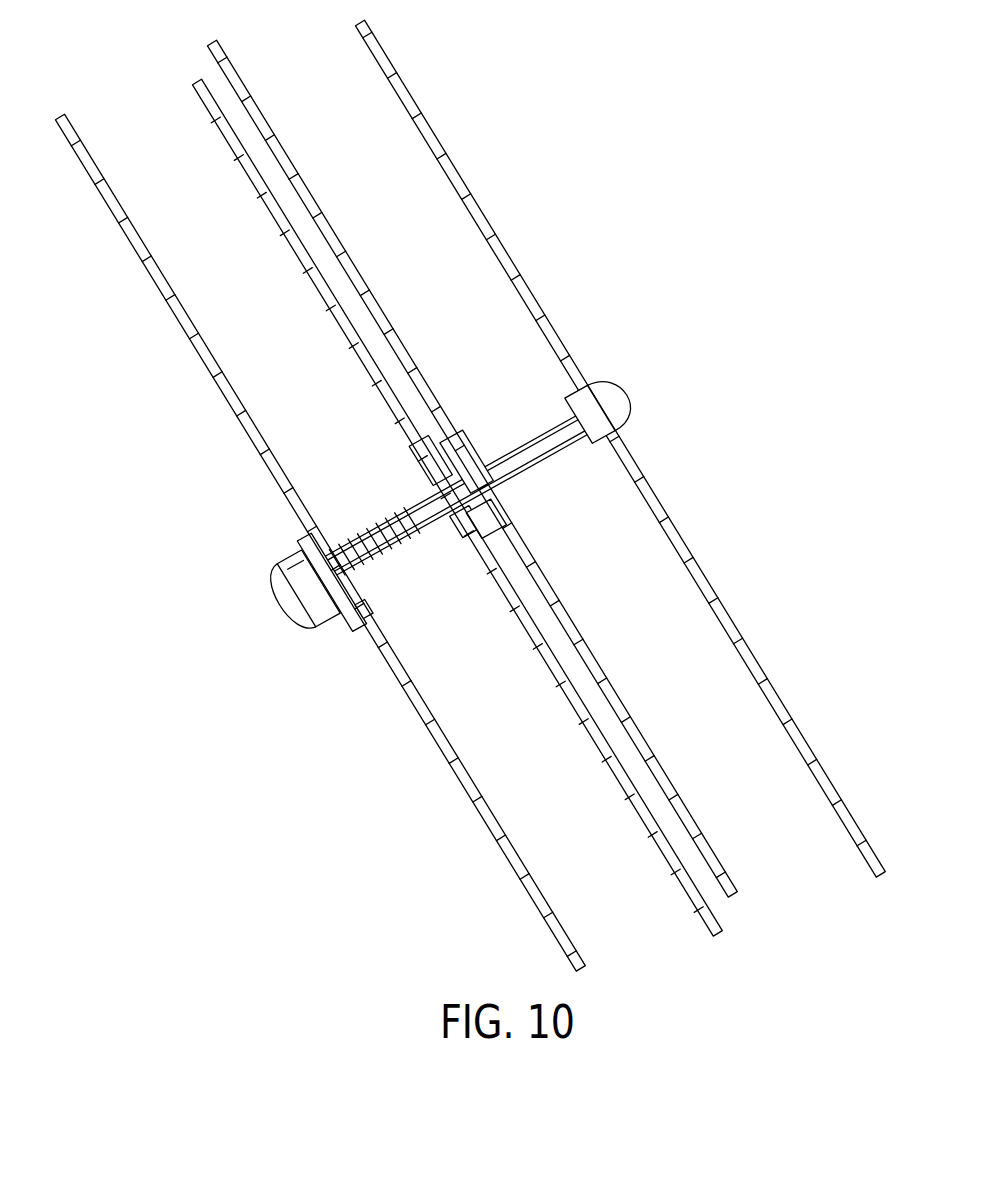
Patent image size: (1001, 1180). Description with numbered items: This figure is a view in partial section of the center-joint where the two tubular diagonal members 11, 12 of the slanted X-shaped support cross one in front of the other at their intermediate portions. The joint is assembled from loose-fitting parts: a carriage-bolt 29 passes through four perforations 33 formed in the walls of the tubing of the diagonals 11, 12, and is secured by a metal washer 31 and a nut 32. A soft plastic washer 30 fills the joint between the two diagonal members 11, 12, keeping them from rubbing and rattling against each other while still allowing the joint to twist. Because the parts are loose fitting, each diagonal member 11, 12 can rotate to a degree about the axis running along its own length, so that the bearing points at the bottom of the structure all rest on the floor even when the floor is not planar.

The first diagonal member 11 is at (455, 165).
The second diagonal member 12 is at (182, 336).
The carriage-bolt 29 is at (587, 400).
The soft plastic washer 30 is at (472, 495).
The metal washer 31 is at (353, 615).
The nut 32 is at (308, 593).
The perforations 33 is at (563, 387).